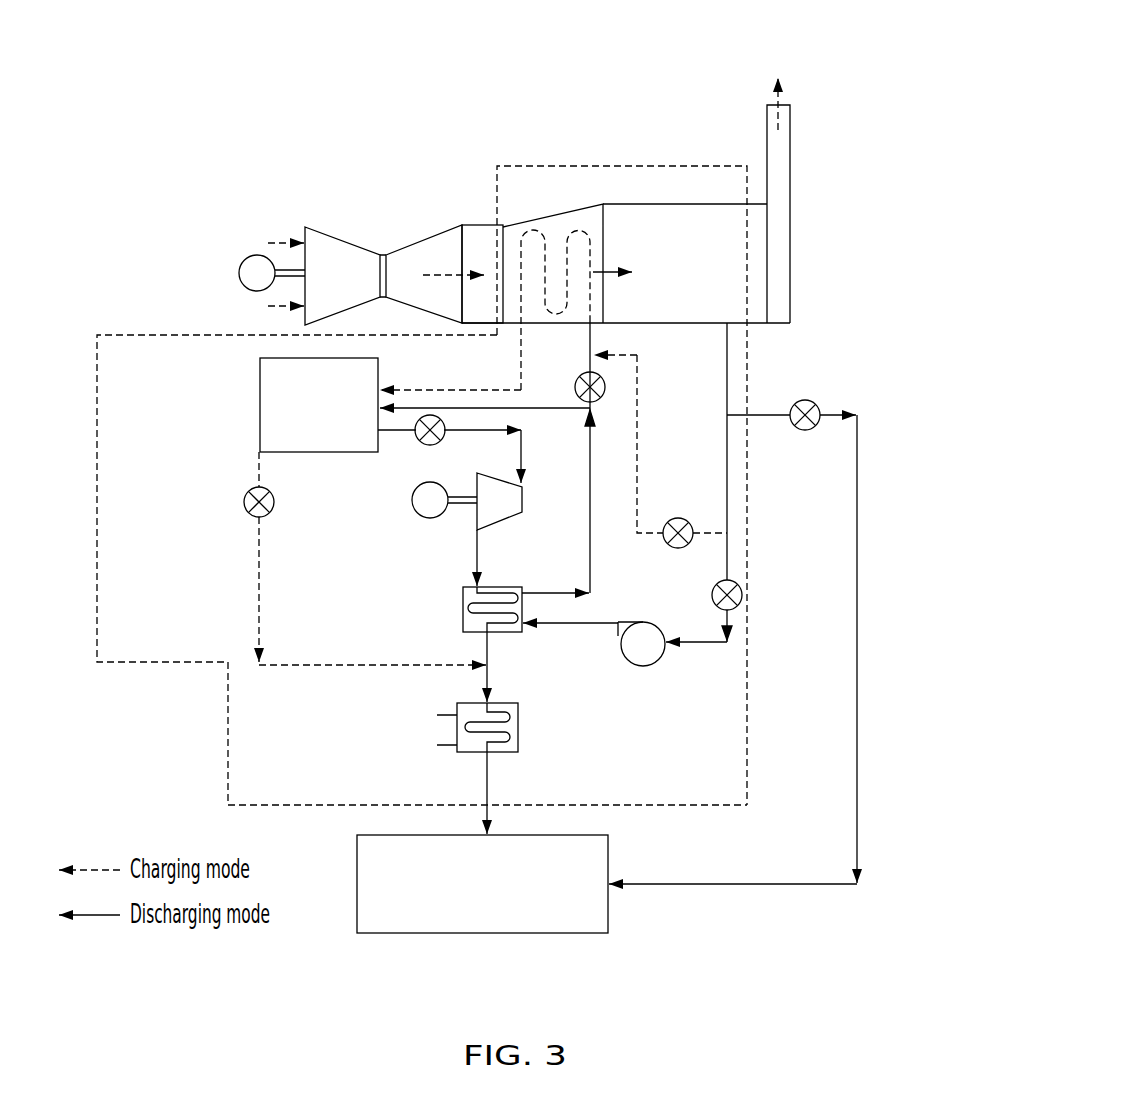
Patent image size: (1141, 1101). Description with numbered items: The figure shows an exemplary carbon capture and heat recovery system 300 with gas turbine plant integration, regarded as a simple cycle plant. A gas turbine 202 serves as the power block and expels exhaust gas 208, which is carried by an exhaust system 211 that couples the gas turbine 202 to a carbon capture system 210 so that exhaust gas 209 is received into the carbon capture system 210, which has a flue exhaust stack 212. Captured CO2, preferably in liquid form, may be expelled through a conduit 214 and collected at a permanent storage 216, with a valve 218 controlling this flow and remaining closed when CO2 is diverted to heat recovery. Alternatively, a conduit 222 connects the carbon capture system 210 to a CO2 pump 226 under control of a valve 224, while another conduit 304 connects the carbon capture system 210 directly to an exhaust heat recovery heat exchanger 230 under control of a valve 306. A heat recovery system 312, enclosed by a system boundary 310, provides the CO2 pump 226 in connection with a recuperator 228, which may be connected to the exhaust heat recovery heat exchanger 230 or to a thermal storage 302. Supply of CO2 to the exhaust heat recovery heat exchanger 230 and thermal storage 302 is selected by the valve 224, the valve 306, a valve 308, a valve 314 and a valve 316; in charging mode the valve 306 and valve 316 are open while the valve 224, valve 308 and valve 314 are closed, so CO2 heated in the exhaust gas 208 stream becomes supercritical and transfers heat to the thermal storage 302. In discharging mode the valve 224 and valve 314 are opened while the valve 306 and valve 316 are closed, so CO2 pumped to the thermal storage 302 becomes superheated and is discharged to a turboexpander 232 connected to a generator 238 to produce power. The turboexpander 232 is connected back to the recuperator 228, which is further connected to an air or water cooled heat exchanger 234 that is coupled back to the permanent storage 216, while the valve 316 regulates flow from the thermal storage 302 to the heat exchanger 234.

The carbon capture and heat recovery system 300 is at (262, 120).
The gas turbine 202 is at (322, 292).
The exhaust gas 208 is at (448, 274).
The exhaust system 211 is at (522, 234).
The exhaust gas 209 is at (600, 268).
The carbon capture system 210 is at (690, 206).
The flue exhaust stack 212 is at (776, 163).
The thermal storage 302 is at (260, 405).
The valve 316 is at (244, 502).
The valve 314 is at (443, 440).
The turboexpander 232 is at (523, 512).
The generator 238 is at (433, 519).
The exhaust heat recovery heat exchanger 230 is at (555, 318).
The valve 308 is at (600, 397).
The conduit 304 is at (640, 409).
The valve 306 is at (678, 518).
The conduit 222 is at (730, 374).
The valve 218 is at (806, 400).
The valve 224 is at (742, 603).
The conduit 214 is at (860, 704).
The recuperator 228 is at (515, 632).
The CO2 pump 226 is at (630, 663).
The heat exchanger 234 is at (519, 728).
The heat recovery system 312 is at (745, 801).
The system boundary 310 is at (683, 807).
The permanent storage 216 is at (357, 886).